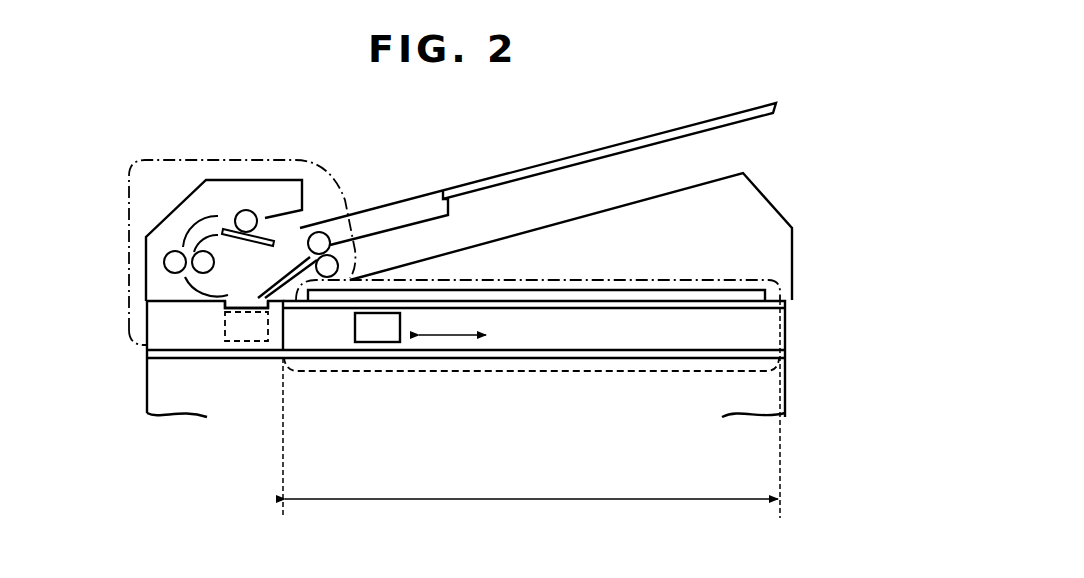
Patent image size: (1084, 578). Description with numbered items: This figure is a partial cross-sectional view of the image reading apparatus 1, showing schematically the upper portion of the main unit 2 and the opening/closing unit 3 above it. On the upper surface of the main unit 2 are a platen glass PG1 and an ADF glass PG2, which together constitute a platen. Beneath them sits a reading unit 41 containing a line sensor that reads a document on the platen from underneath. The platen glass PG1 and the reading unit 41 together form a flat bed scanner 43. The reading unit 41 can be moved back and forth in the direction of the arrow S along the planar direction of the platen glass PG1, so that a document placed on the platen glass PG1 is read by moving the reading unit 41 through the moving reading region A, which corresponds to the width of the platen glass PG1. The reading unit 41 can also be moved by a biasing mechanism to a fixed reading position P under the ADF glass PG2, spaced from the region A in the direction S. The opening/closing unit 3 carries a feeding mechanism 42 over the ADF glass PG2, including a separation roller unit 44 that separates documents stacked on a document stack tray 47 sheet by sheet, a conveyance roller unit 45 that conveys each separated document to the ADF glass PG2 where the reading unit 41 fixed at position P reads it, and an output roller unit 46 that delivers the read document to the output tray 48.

The image reading apparatus 1 is at (487, 416).
The main unit 2 is at (120, 385).
The opening/closing unit 3 is at (207, 228).
The reading unit 41 is at (377, 336).
The feeding mechanism 42 is at (164, 158).
The flat bed scanner 43 is at (680, 374).
The separation roller unit 44 is at (247, 210).
The conveyance roller unit 45 is at (202, 251).
The output roller unit 46 is at (350, 276).
The document stack tray 47 is at (580, 152).
The output tray 48 is at (628, 202).
The platen glass PG1 is at (766, 301).
The ADF glass PG2 is at (227, 305).
The fixed reading position P is at (300, 288).
The direction of movement S is at (452, 324).
The moving reading region A is at (531, 409).